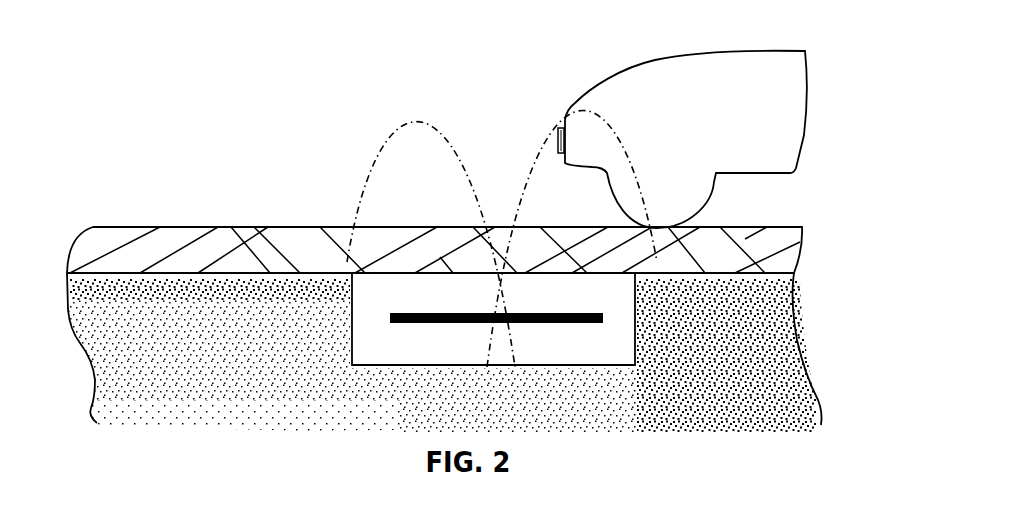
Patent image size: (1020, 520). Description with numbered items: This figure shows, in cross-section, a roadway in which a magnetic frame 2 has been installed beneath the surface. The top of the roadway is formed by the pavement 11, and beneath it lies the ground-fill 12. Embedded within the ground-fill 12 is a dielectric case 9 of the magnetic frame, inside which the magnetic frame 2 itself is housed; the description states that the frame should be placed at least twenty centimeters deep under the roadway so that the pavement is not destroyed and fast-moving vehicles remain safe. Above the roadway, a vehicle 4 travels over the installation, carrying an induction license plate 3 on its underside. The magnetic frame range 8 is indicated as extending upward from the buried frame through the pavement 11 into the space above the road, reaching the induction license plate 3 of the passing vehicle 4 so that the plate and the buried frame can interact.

The magnetic frame 2 is at (403, 312).
The induction license plate 3 is at (557, 137).
The vehicle 4 is at (620, 80).
The magnetic frame range 8 is at (416, 118).
The dielectric case of the magnetic frame 9 is at (375, 345).
The pavement 11 is at (382, 240).
The ground-fill 12 is at (180, 333).